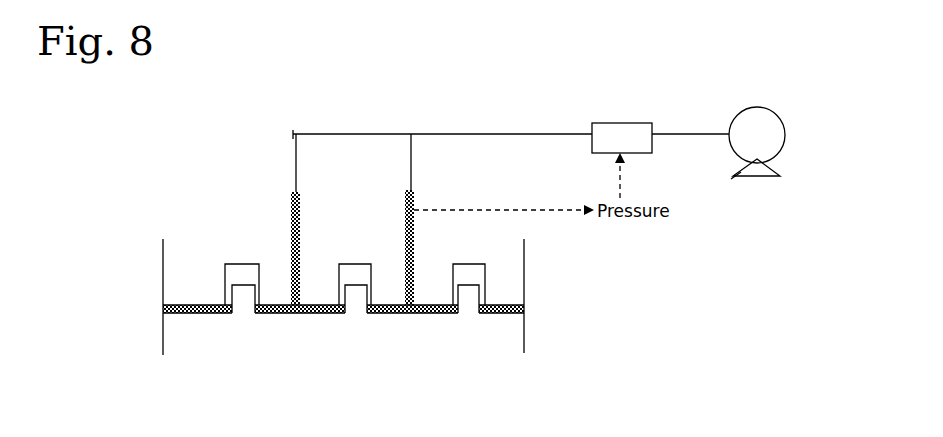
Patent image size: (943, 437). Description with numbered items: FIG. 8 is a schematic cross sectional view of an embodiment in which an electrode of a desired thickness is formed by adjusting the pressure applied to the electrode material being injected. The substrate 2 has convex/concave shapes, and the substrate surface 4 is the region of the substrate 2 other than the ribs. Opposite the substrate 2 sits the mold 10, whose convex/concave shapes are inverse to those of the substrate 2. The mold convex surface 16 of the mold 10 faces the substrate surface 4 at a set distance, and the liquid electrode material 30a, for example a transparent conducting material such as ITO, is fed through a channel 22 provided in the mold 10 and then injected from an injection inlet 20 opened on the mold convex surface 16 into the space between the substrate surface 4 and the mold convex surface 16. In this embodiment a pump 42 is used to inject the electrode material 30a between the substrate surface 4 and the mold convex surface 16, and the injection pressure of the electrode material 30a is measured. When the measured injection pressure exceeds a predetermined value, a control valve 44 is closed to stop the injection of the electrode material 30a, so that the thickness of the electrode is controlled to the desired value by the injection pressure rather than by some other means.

The substrate 2 is at (513, 335).
The substrate surface 4 is at (515, 308).
The mold 10 is at (505, 291).
The mold convex surface 16 is at (430, 305).
The injection inlet 20 is at (402, 313).
The channel 22 is at (405, 218).
The liquid electrode material 30a is at (302, 313).
The pump 42 is at (765, 134).
The control valve 44 is at (628, 143).